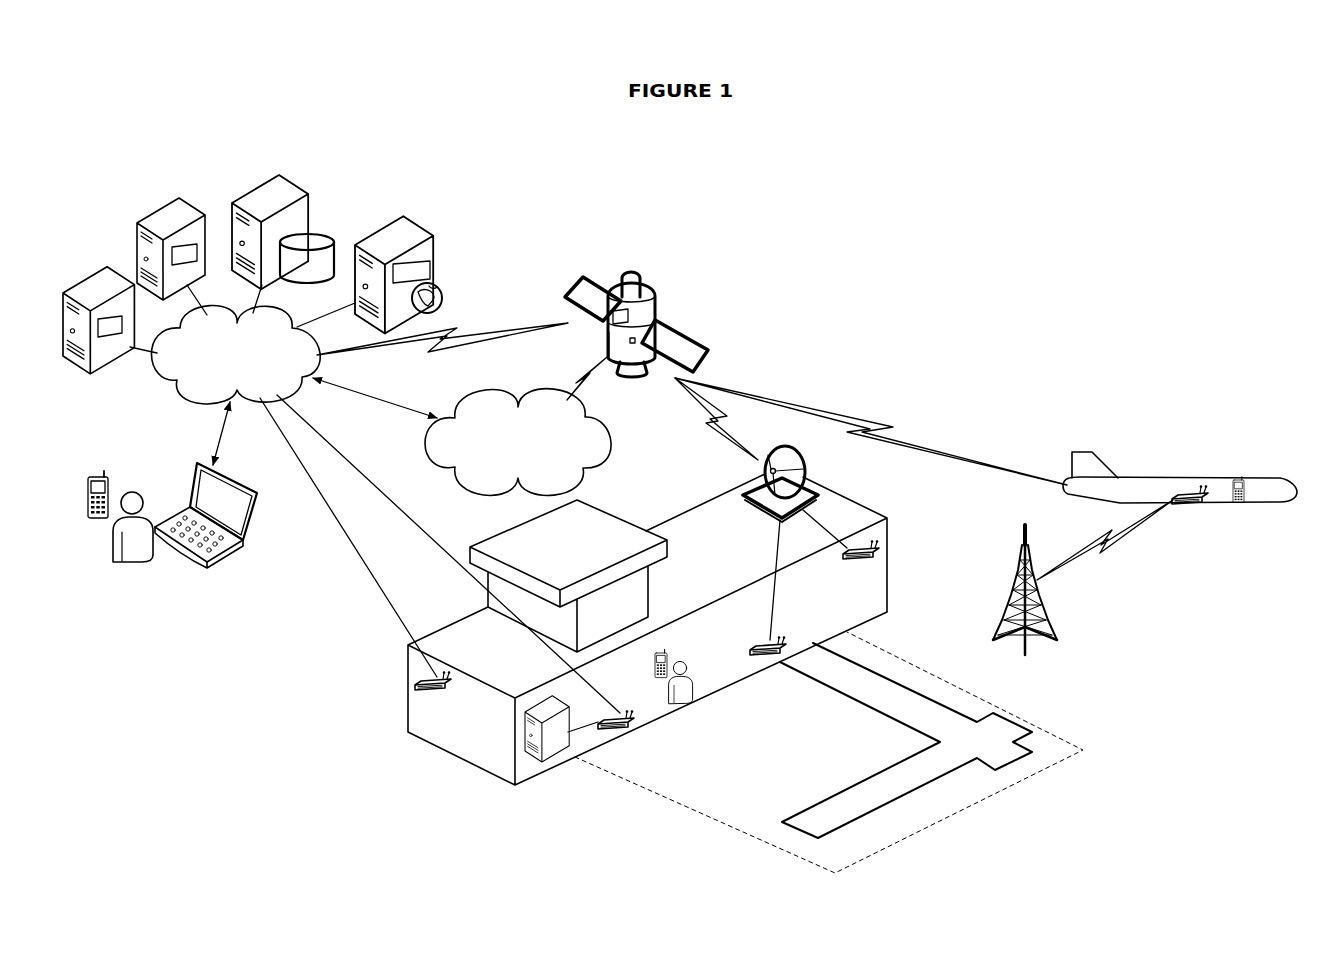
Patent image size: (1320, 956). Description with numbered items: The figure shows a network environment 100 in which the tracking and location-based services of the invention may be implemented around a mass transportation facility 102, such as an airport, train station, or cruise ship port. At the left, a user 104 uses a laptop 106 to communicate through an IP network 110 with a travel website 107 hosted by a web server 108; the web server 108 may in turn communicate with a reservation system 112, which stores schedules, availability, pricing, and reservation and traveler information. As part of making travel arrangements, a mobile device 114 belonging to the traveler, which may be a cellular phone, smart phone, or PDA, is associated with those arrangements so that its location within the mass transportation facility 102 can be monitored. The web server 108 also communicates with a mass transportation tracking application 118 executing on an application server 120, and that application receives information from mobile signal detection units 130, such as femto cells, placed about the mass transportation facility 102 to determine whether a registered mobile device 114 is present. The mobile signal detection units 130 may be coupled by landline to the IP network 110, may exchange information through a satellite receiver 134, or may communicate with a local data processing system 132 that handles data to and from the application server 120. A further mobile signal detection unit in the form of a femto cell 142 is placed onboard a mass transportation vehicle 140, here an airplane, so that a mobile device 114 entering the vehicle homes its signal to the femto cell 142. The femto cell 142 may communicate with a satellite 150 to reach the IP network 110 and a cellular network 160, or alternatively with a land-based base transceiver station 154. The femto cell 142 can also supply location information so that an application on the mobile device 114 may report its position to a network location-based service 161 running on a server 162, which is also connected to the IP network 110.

The network environment 100 is at (160, 78).
The mass transportation facility 102 is at (686, 522).
The user 104 is at (147, 562).
The laptop 106 is at (235, 545).
The travel website 107 is at (432, 269).
The web server 108 is at (403, 219).
The IP network 110 is at (235, 355).
The reservation system 112 is at (282, 178).
The mobile device 114 is at (90, 477).
The mass transportation tracking application 118 is at (197, 263).
The application server 120 is at (178, 198).
The mobile signal detection unit 130 is at (853, 559).
The data processing system 132 is at (553, 753).
The satellite receiver 134 is at (805, 469).
The mass transportation vehicle 140 is at (1153, 477).
The femto cell 142 is at (1206, 503).
The satellite 150 is at (622, 272).
The base transceiver station 154 is at (1048, 643).
The cellular network 160 is at (518, 442).
The network location-based service 161 is at (112, 336).
The server 162 is at (88, 283).